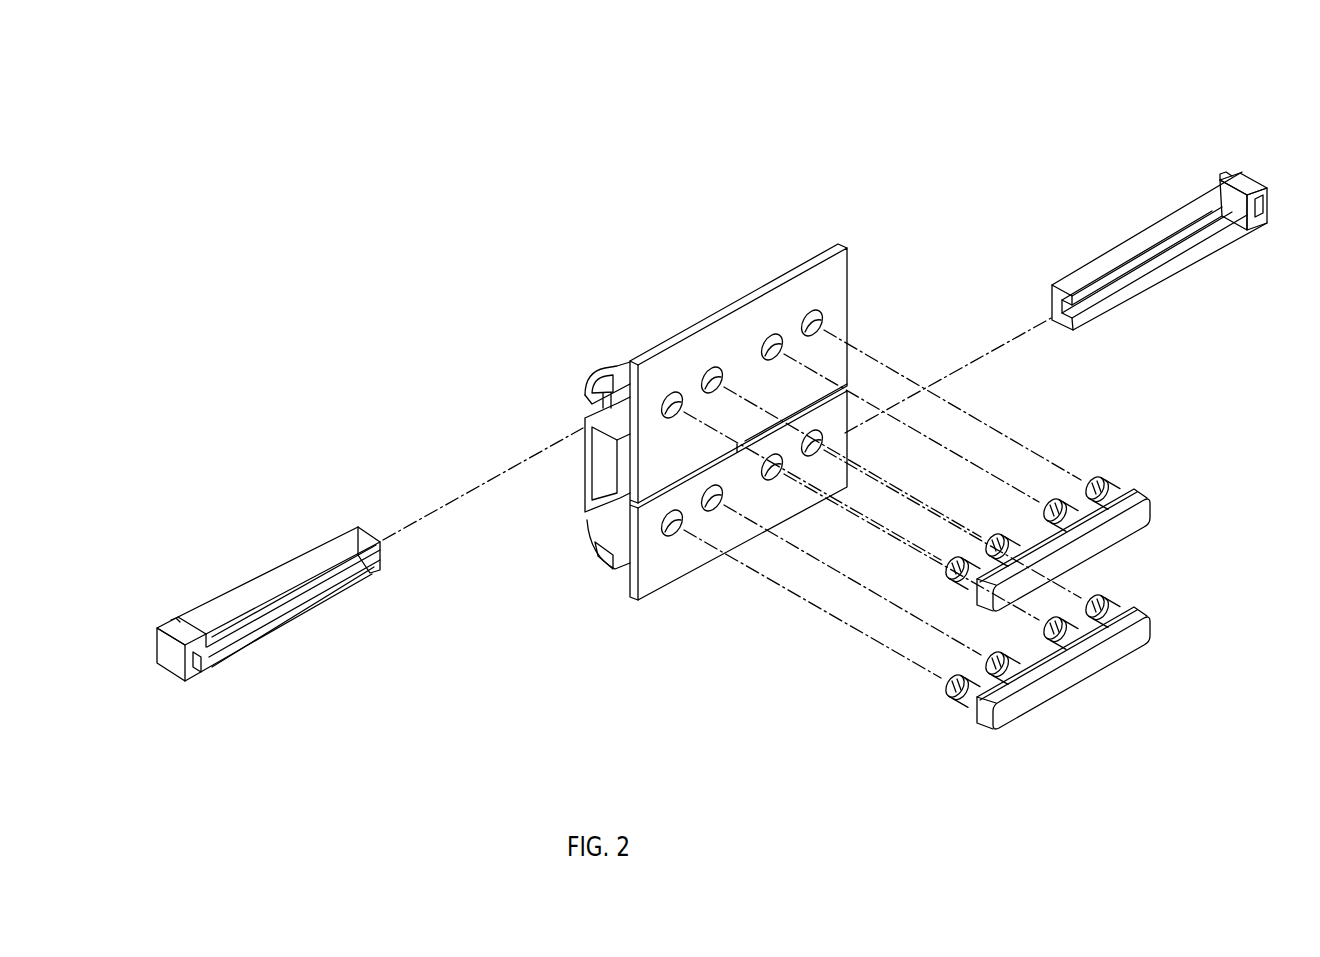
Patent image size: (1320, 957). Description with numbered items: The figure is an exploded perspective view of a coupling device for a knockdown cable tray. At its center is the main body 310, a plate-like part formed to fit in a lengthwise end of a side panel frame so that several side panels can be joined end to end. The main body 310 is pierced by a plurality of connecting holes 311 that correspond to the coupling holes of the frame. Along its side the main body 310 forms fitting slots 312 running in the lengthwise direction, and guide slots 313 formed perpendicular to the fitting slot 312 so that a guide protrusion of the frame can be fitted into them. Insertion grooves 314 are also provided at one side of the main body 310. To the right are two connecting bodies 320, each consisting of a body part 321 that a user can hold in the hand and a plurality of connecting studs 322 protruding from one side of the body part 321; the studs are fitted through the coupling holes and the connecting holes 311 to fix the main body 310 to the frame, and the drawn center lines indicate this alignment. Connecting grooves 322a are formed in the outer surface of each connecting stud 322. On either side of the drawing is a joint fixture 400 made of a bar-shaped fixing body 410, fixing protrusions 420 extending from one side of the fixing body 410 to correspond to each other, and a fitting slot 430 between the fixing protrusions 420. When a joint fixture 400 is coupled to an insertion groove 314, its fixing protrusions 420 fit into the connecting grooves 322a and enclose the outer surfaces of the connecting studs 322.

The main body 310 is at (716, 441).
The connecting holes 311 is at (818, 324).
The fitting slot 312 is at (627, 522).
The guide slot 313 is at (617, 510).
The insertion groove 314 is at (603, 403).
The connecting body 320 is at (1009, 562).
The body part 321 is at (1143, 487).
The connecting studs 322 is at (996, 557).
The connecting grooves 322a is at (1092, 483).
The joint fixture 400 is at (700, 372).
The fixing body 410 is at (1235, 172).
The fixing protrusions 420 is at (1112, 263).
The fitting slot 430 is at (1198, 243).